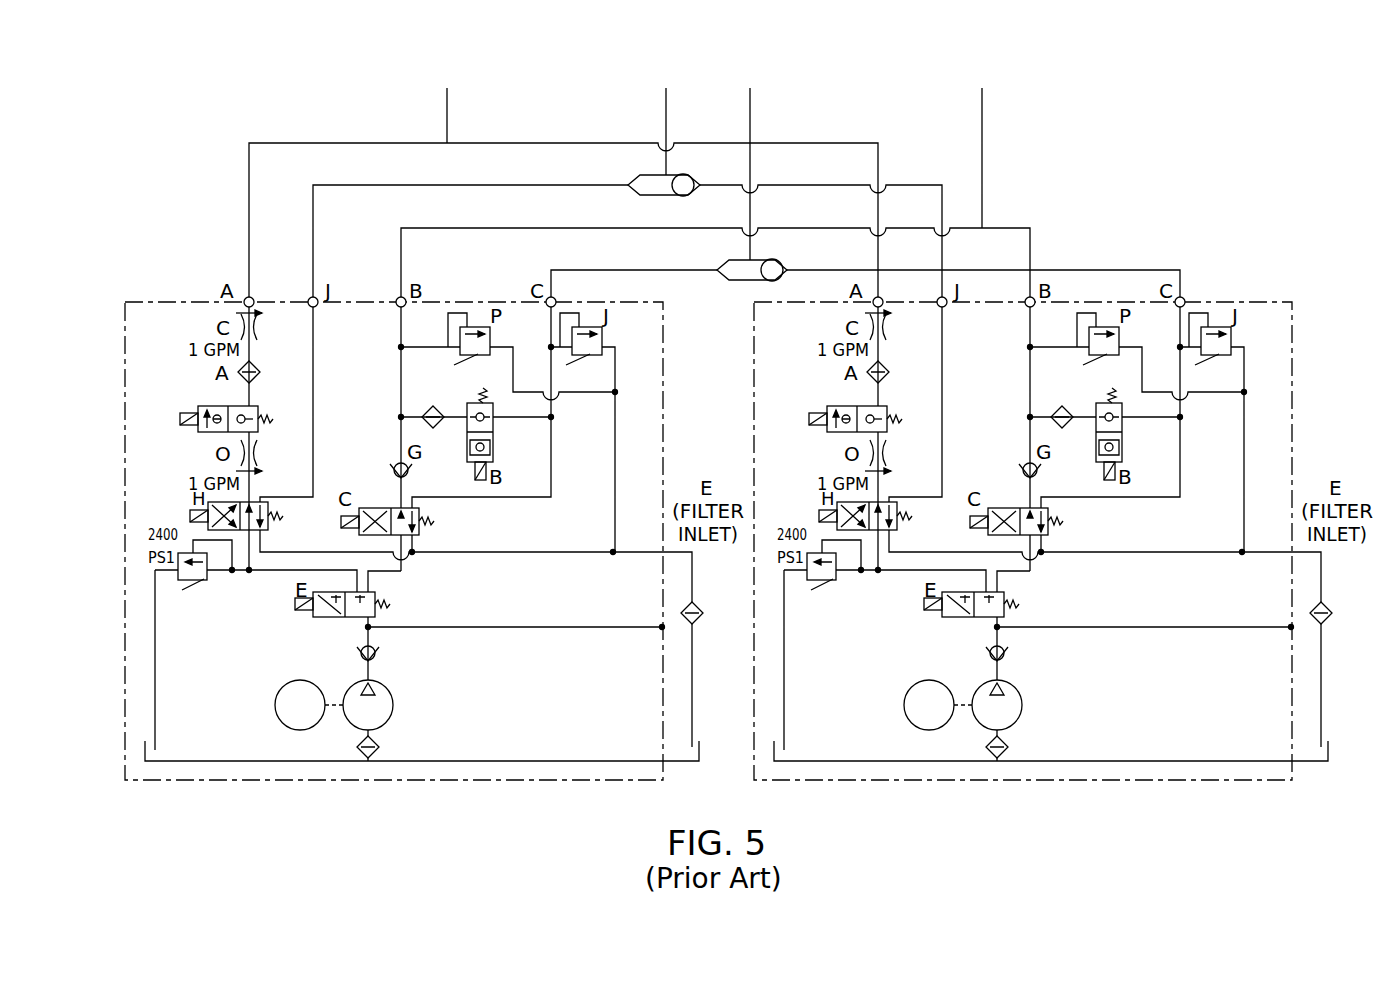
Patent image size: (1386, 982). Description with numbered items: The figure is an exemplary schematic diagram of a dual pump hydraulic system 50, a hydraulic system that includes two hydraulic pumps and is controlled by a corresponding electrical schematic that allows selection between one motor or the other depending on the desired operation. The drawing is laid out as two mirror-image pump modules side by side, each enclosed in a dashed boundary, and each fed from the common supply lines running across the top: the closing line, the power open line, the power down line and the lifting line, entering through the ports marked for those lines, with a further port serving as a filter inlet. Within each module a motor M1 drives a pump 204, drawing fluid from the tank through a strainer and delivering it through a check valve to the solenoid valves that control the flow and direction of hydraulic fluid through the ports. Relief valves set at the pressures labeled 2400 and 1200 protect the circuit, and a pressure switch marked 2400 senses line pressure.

The dual pump hydraulic system 50 is at (749, 409).
The hydraulic pump 204 is at (682, 705).
The electric motor M1 is at (614, 705).
The 2400 PSI relief valve 2400 is at (813, 339).
The 1200 PSI relief valve 1200 is at (924, 339).